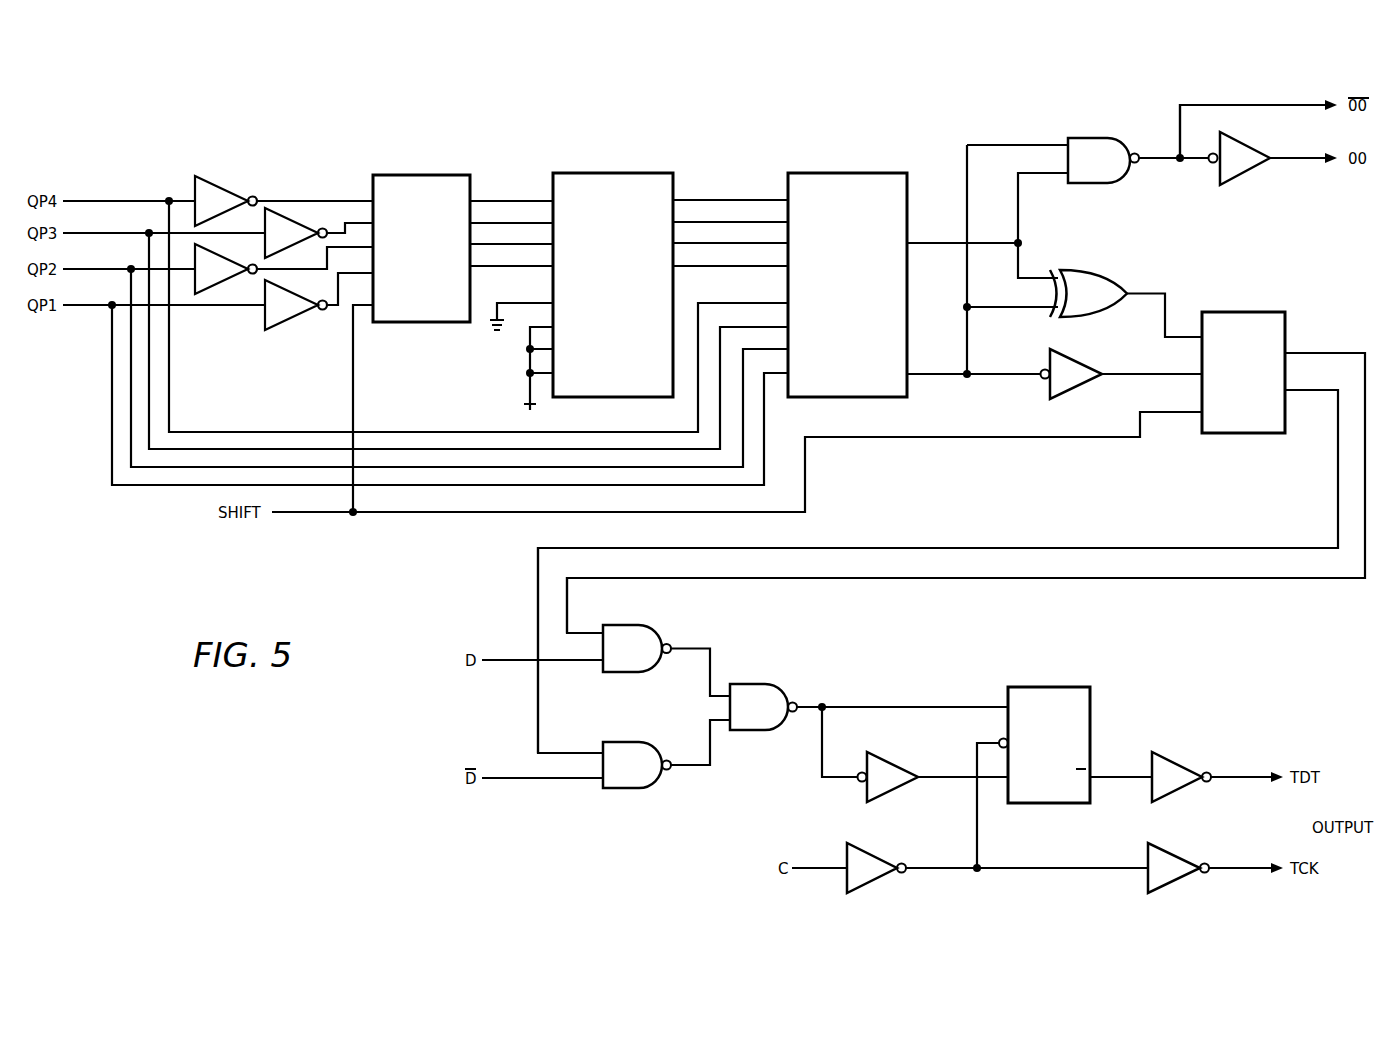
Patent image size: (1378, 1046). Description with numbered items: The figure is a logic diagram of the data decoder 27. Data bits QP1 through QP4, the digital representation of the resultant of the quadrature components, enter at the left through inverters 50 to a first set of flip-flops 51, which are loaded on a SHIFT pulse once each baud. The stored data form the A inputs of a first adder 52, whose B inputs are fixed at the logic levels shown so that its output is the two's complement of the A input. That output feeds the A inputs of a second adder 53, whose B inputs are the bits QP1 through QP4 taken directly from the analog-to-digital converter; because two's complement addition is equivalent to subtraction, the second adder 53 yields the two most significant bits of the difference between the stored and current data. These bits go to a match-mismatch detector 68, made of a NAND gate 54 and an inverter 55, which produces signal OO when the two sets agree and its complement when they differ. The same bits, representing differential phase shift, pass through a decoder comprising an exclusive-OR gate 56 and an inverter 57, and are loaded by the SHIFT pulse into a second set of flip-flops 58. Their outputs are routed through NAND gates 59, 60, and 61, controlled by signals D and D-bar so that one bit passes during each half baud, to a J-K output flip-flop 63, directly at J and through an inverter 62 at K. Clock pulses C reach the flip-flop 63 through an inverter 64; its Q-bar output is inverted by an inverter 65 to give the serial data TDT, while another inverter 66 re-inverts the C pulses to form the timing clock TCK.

The data decoder 27 is at (502, 545).
The inverters 50 is at (265, 178).
The first set of flip-flops 51 is at (420, 173).
The first adder 52 is at (622, 172).
The second adder 53 is at (845, 172).
The NAND gate 54 is at (1105, 138).
The inverter 55 is at (1243, 173).
The exclusive-OR gate 56 is at (1100, 268).
The inverter 57 is at (1075, 355).
The second set of flip-flops 58 is at (1248, 312).
The NAND gate 59 is at (637, 625).
The NAND gate 60 is at (637, 742).
The NAND gate 61 is at (757, 684).
The inverter 62 is at (887, 765).
The J-K output flip-flop 63 is at (1055, 687).
The inverter 64 is at (875, 855).
The inverter 65 is at (1182, 765).
The inverter 66 is at (1183, 857).
The match-mismatch detector 68 is at (1155, 116).